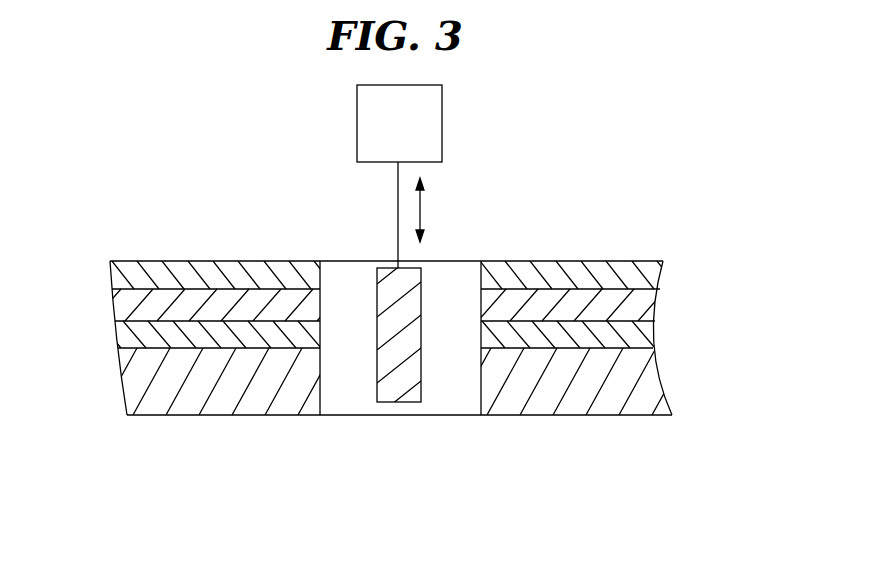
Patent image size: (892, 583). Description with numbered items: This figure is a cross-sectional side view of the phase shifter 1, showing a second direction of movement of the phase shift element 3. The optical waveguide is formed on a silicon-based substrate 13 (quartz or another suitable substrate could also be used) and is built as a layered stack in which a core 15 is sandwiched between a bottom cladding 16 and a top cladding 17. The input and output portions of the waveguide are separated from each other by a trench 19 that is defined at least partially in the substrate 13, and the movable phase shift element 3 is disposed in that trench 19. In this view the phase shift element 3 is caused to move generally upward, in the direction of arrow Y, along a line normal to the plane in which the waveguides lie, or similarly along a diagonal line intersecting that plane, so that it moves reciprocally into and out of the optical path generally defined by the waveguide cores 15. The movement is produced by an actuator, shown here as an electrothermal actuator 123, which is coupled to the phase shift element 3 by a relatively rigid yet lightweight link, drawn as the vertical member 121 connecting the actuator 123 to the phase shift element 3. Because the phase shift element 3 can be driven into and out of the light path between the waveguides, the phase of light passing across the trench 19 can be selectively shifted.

The phase shifter 1 is at (545, 190).
The phase shift element 3 is at (422, 387).
The substrate 13 is at (140, 375).
The core 15 is at (122, 310).
The bottom cladding 16 is at (645, 330).
The top cladding 17 is at (655, 273).
The trench 19 is at (349, 385).
The support shaft 121 is at (397, 230).
The electrothermal actuator 123 is at (435, 120).